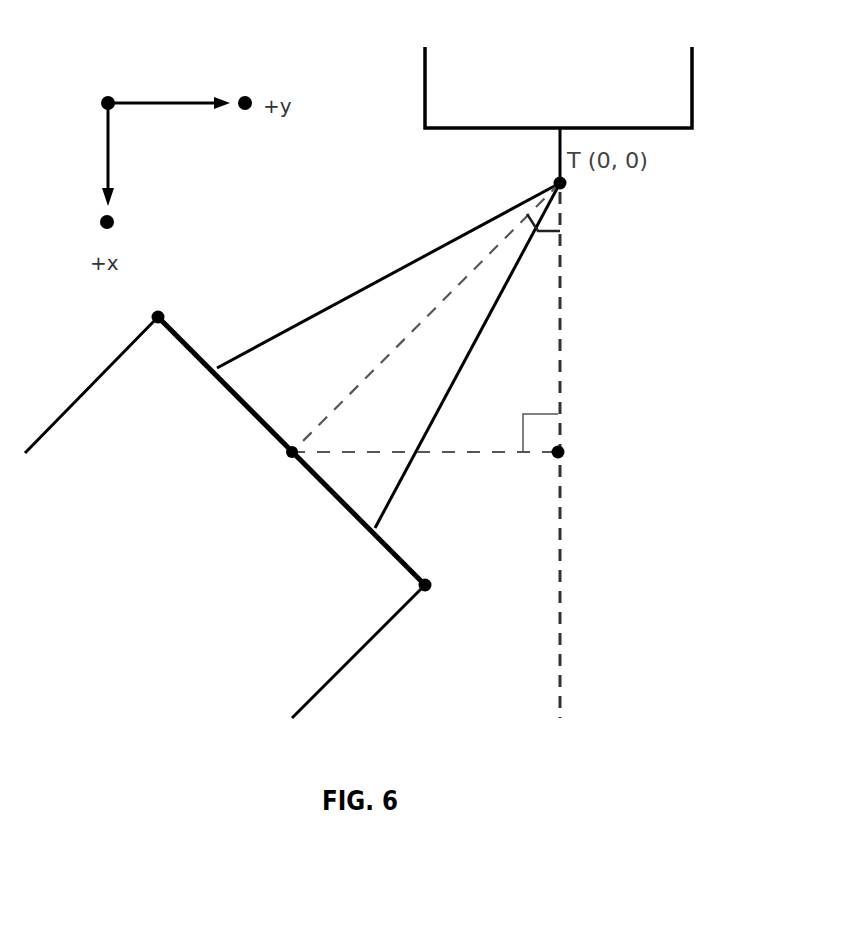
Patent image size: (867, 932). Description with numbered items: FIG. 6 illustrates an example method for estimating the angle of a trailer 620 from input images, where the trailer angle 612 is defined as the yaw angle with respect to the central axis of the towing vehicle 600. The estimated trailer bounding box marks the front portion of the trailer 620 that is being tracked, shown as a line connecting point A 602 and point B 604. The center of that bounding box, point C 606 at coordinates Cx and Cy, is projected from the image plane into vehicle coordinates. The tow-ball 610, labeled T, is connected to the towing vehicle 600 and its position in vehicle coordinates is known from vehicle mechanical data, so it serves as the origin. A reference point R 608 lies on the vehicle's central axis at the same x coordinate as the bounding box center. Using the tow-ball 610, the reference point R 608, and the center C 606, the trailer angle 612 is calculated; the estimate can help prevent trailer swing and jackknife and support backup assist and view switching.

The towing vehicle 600 is at (558, 115).
The point A 602 is at (448, 573).
The point B 604 is at (144, 305).
The center of the bounding box C 606 is at (251, 474).
The reference point R 608 is at (599, 446).
The tow-ball 610 is at (537, 174).
The trailer angle 612 is at (581, 232).
The trailer 620 is at (225, 517).